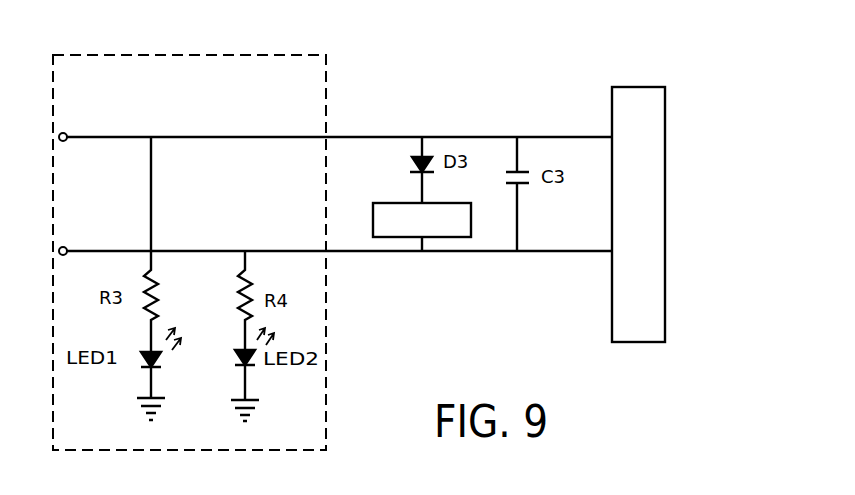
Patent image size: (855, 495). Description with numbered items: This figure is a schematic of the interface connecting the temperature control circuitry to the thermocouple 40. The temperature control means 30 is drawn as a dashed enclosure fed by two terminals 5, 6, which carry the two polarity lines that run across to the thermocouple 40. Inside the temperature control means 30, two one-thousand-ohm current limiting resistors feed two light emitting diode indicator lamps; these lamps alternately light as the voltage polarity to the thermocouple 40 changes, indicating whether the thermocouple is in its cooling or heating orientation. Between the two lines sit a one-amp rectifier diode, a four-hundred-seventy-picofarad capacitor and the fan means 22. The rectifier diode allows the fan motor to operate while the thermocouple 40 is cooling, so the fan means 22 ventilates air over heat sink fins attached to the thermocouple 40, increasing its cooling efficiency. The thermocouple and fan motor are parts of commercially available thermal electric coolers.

The terminal 5 is at (320, 138).
The terminal 6 is at (320, 252).
The fan means 22 is at (458, 225).
The temperature control means 30 is at (310, 79).
The thermocouple 40 is at (658, 170).